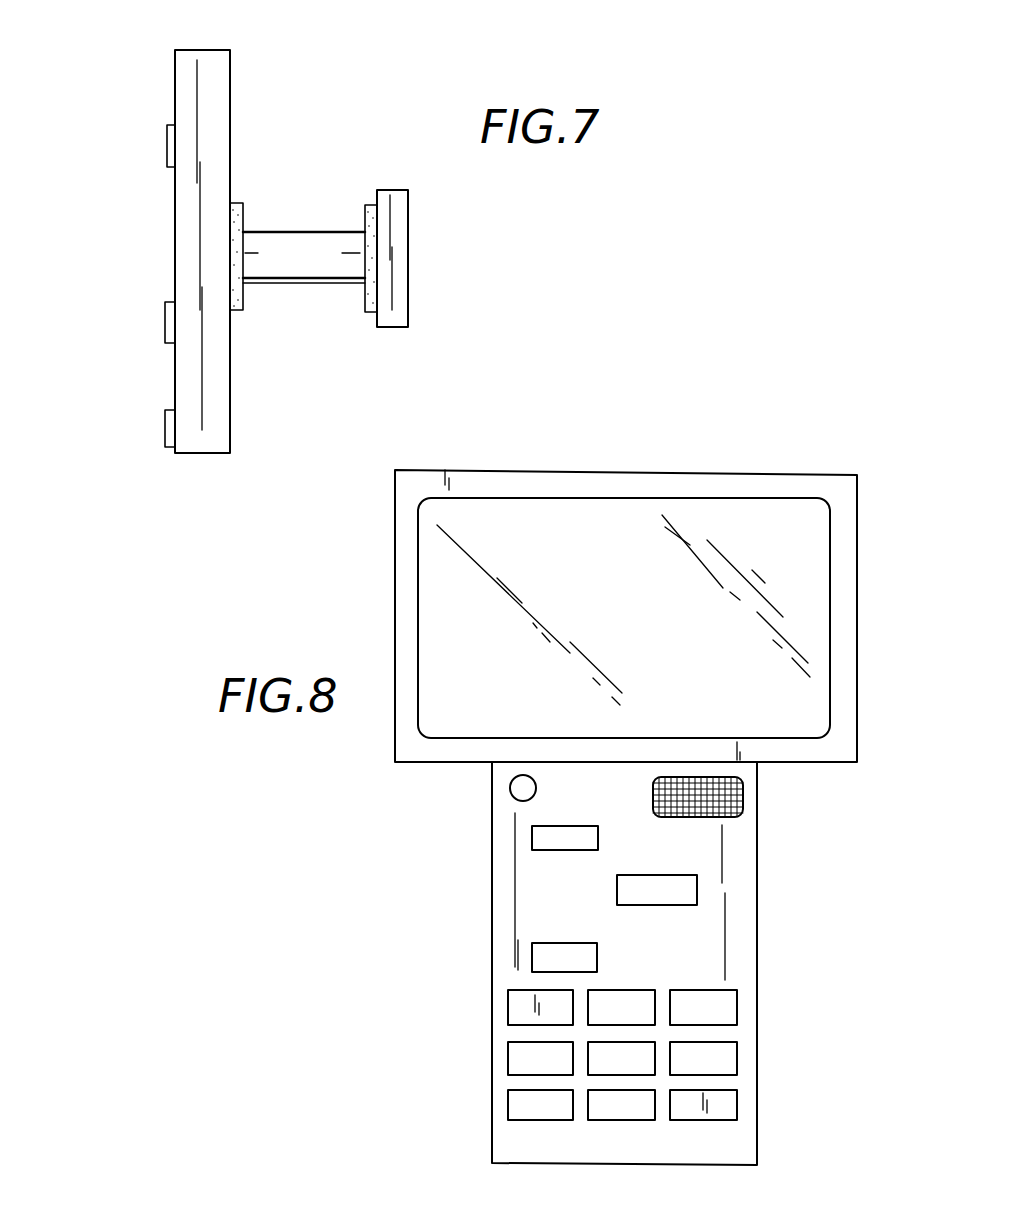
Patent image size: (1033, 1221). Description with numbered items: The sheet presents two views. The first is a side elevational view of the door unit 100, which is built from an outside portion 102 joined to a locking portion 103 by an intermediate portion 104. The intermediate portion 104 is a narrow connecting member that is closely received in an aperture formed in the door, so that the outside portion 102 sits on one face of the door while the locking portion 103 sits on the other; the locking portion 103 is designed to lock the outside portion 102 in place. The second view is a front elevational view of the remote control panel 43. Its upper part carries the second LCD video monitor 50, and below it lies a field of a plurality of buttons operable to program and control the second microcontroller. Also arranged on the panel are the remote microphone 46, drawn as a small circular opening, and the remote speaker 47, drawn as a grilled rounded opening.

In FIG. 7, the door unit 100 is at (147, 190).
In FIG. 7, the outside portion 102 is at (175, 82).
In FIG. 7, the locking portion 103 is at (397, 188).
In FIG. 7, the intermediate portion 104 is at (297, 230).
In FIG. 8, the remote control panel 43 is at (730, 453).
In FIG. 8, the remote microphone 46 is at (510, 788).
In FIG. 8, the remote speaker 47 is at (733, 810).
In FIG. 8, the second LCD video monitor 50 is at (797, 612).